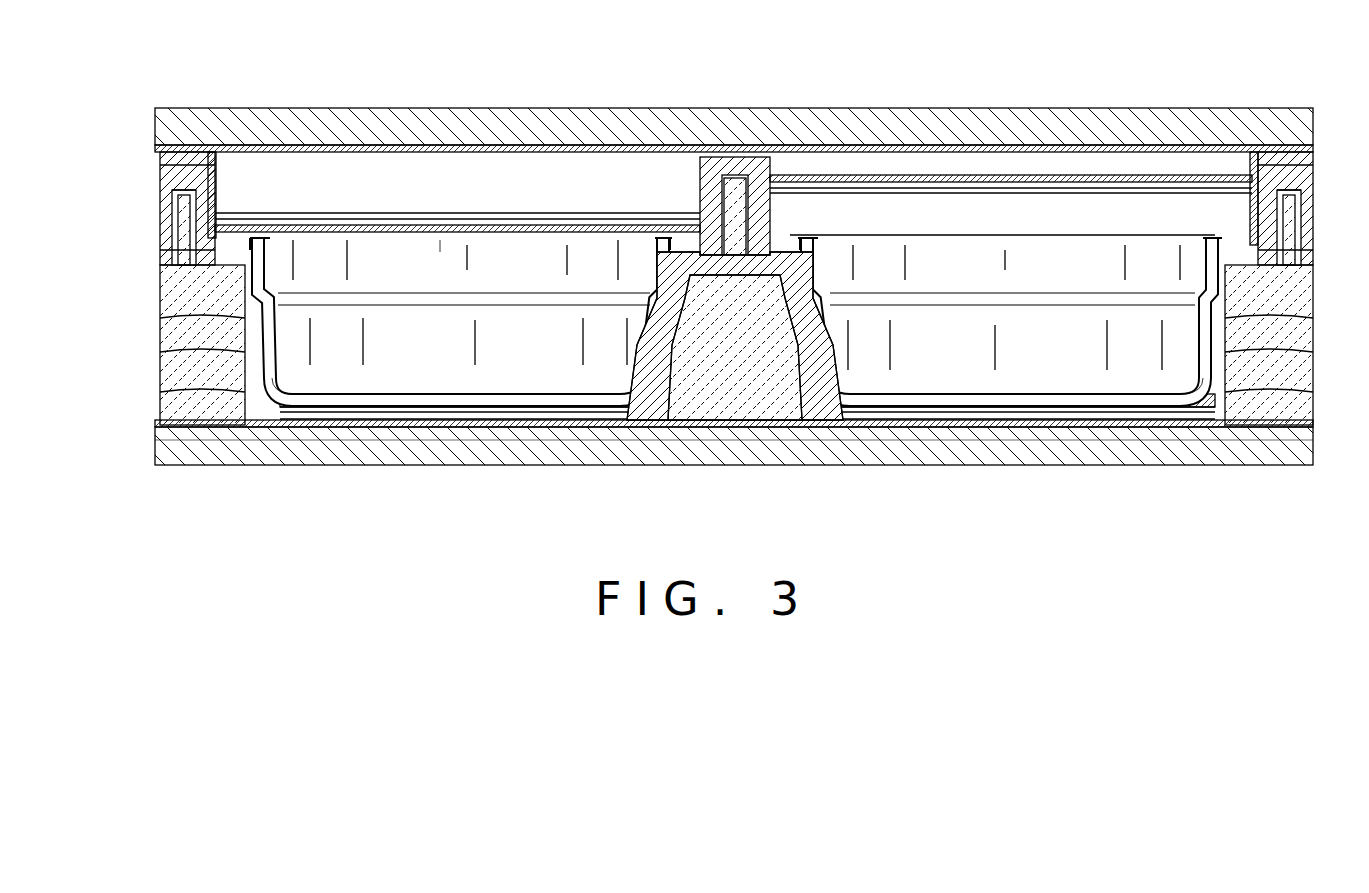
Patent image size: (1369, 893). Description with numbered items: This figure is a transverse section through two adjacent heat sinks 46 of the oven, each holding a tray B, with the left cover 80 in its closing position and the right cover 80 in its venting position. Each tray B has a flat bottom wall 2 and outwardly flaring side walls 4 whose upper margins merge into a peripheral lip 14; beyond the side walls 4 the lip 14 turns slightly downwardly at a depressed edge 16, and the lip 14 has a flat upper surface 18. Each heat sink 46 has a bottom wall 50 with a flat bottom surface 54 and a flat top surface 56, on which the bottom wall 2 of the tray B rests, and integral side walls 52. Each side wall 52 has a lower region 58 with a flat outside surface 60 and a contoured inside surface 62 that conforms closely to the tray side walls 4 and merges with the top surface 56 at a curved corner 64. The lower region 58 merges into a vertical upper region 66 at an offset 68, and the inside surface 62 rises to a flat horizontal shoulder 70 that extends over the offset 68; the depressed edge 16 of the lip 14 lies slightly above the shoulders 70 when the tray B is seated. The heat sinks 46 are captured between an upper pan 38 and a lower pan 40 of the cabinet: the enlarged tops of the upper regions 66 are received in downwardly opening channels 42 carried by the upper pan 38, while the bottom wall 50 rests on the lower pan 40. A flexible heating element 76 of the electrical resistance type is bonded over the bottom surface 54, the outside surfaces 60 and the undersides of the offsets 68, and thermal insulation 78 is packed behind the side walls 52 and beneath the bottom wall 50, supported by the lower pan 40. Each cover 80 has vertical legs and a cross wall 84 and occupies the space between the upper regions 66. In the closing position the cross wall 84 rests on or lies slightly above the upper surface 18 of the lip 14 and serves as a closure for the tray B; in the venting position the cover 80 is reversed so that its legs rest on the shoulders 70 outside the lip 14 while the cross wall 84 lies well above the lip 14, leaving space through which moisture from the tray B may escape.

The bottom wall 2 is at (532, 396).
The side walls 4 is at (478, 85).
The peripheral lip 14 is at (652, 215).
The depressed edge 16 is at (178, 230).
The upper surface 18 is at (251, 240).
The upper pan 38 is at (675, 150).
The lower pan 40 is at (200, 465).
The channels 42 is at (202, 152).
The heat sink 46 is at (250, 395).
The bottom wall 50 is at (302, 440).
The side walls 52 is at (240, 282).
The flat bottom surface 54 is at (382, 425).
The flat top surface 56 is at (415, 396).
The lower region 58 is at (240, 348).
The flat outside surface 60 is at (240, 315).
The contoured inside surface 62 is at (278, 340).
The curved corner 64 is at (290, 385).
The upper region 66 is at (180, 195).
The offset 68 is at (264, 262).
The flat horizontal shoulders 70 is at (262, 236).
The flexible heating element 76 is at (458, 420).
The thermal insulation 78 is at (330, 150).
The cover 80 is at (557, 220).
The cross wall 84 is at (510, 225).
The tray B is at (440, 252).